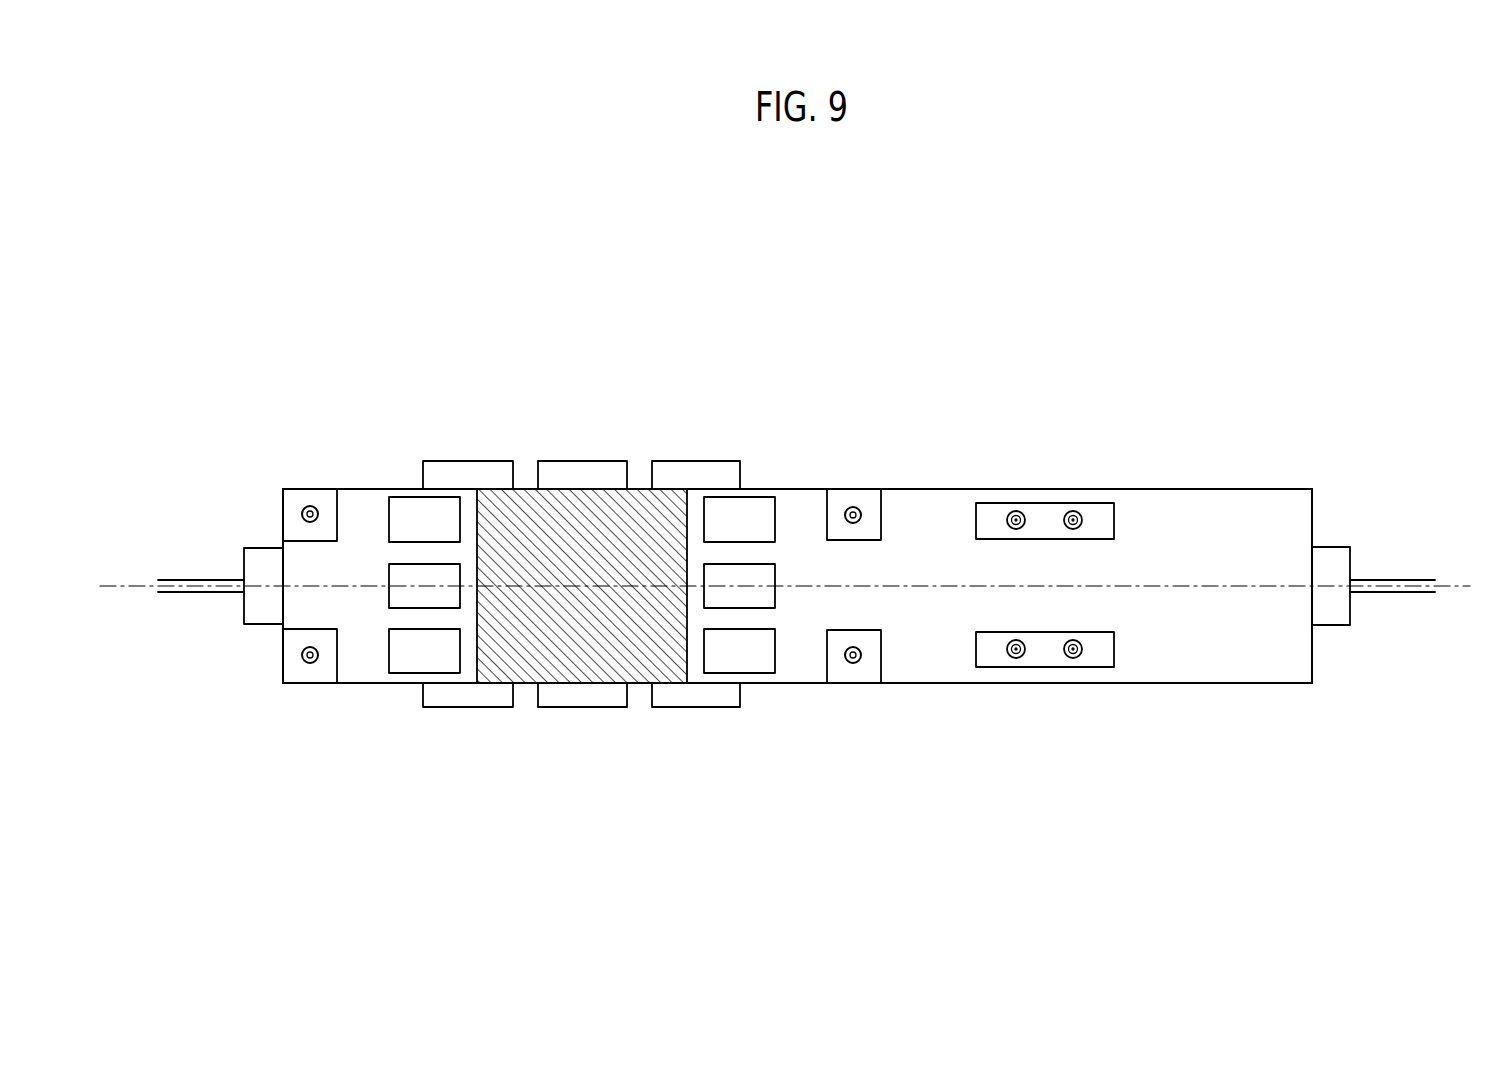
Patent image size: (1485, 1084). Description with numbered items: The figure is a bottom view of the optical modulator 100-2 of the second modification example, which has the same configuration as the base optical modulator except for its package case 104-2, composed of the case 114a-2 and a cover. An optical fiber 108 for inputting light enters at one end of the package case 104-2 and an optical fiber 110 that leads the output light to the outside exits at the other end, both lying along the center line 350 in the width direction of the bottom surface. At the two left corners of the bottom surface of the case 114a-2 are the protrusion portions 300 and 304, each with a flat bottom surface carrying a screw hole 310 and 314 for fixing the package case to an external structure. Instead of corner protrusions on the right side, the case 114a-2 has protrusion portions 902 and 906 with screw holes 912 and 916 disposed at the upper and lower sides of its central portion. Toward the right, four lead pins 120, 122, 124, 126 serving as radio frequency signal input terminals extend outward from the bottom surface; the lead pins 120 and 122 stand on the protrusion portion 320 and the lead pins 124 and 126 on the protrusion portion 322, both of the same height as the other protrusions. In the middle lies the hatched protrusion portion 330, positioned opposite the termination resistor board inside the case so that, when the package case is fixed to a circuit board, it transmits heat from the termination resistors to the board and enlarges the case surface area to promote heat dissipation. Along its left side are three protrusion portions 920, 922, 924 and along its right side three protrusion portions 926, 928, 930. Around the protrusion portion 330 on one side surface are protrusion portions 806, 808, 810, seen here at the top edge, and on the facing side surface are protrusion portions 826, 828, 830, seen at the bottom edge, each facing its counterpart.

The optical modulator 100-2 is at (423, 313).
The package case 104-2 is at (805, 487).
The case 114a-2 is at (797, 413).
The optical fiber 108 is at (1380, 586).
The optical fiber 110 is at (202, 592).
The lead pin 120 is at (1011, 643).
The lead pin 122 is at (1078, 643).
The lead pin 124 is at (1011, 527).
The lead pin 126 is at (1078, 527).
The protrusion portion 300 is at (320, 500).
The protrusion portion 304 is at (323, 670).
The screw hole 310 is at (305, 506).
The screw hole 314 is at (306, 662).
The protrusion portion 320 is at (1100, 655).
The protrusion portion 322 is at (1100, 515).
The protrusion portion 330 is at (521, 506).
The center line 350 is at (1448, 584).
The protrusion portion 806 is at (470, 473).
The protrusion portion 808 is at (597, 472).
The protrusion portion 810 is at (690, 472).
The protrusion portion 826 is at (468, 693).
The protrusion portion 828 is at (552, 693).
The protrusion portion 830 is at (693, 698).
The protrusion portion 902 is at (875, 503).
The protrusion portion 906 is at (868, 667).
The screw hole 912 is at (853, 508).
The screw hole 916 is at (853, 662).
The protrusion portion 920 is at (405, 512).
The protrusion portion 922 is at (405, 576).
The protrusion portion 924 is at (415, 661).
The protrusion portion 926 is at (767, 517).
The protrusion portion 928 is at (767, 597).
The protrusion portion 930 is at (753, 658).